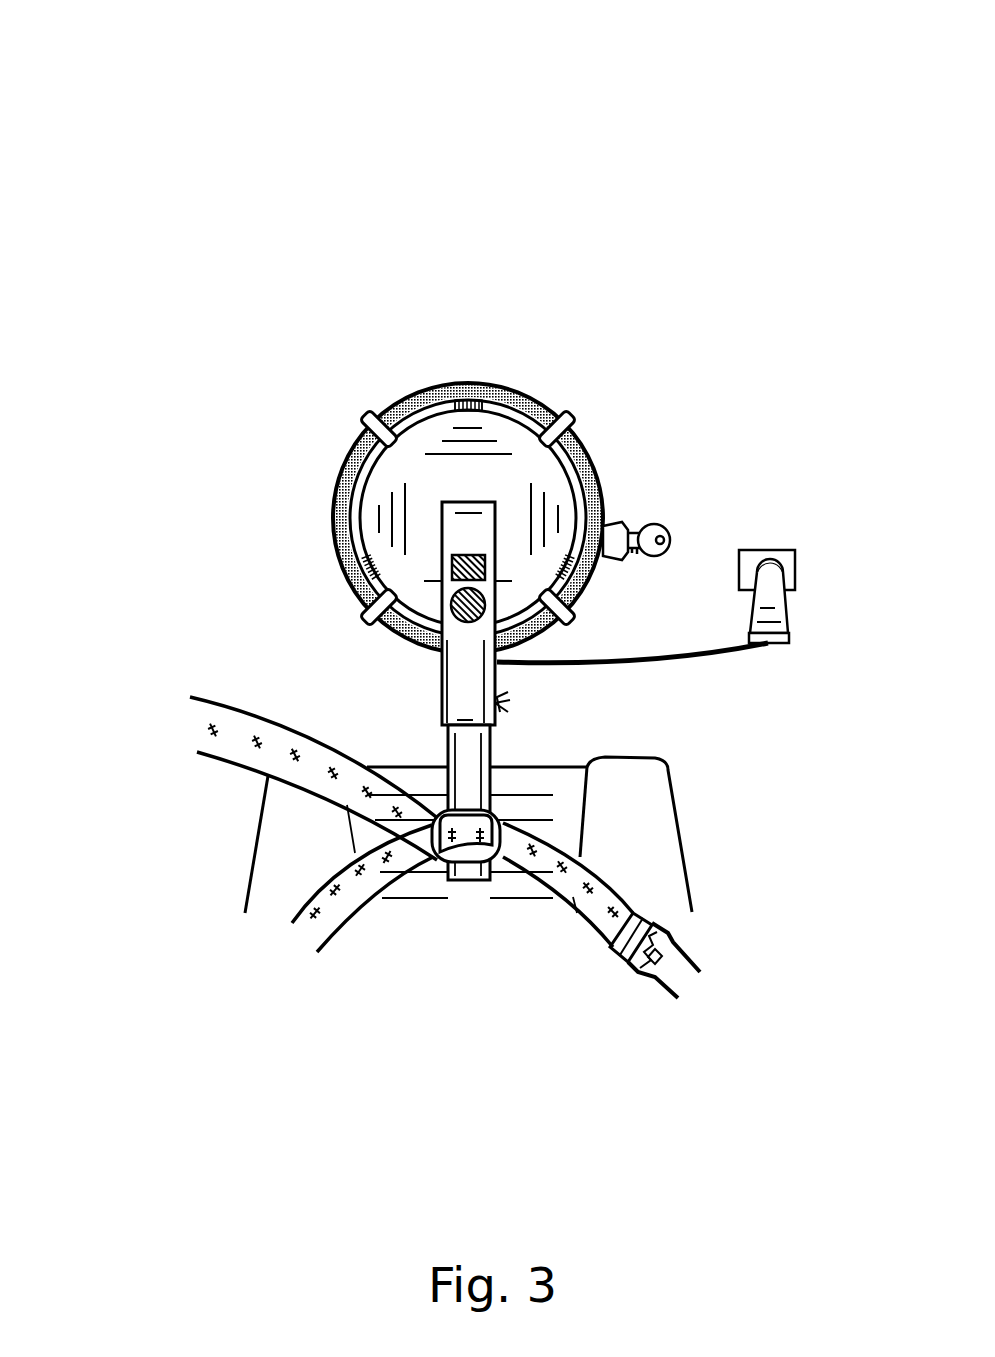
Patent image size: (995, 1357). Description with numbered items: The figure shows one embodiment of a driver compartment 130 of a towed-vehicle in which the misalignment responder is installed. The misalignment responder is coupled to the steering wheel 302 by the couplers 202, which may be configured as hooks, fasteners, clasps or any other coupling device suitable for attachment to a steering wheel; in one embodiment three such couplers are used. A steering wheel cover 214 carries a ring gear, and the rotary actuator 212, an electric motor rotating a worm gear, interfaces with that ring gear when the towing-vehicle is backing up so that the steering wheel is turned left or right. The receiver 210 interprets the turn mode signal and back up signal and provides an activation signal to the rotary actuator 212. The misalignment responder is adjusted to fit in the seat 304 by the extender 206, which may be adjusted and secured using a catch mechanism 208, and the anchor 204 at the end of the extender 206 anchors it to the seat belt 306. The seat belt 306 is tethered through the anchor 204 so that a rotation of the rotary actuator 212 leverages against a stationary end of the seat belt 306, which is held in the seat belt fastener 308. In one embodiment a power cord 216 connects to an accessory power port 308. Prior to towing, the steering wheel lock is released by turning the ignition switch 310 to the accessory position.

The driver compartment 130 is at (96, 94).
The steering wheel 302 is at (470, 383).
The couplers 202 is at (363, 422).
The steering wheel cover 214 is at (333, 508).
The receiver 210 is at (472, 556).
The rotary actuator 212 is at (438, 648).
The ignition switch 310 is at (644, 521).
The seat belt fastener 308 is at (804, 560).
The power cord 216 is at (792, 632).
The catch mechanism 208 is at (510, 713).
The extender 206 is at (442, 747).
The seat 304 is at (678, 786).
The seat belt 306 is at (233, 760).
The anchor 204 is at (437, 874).